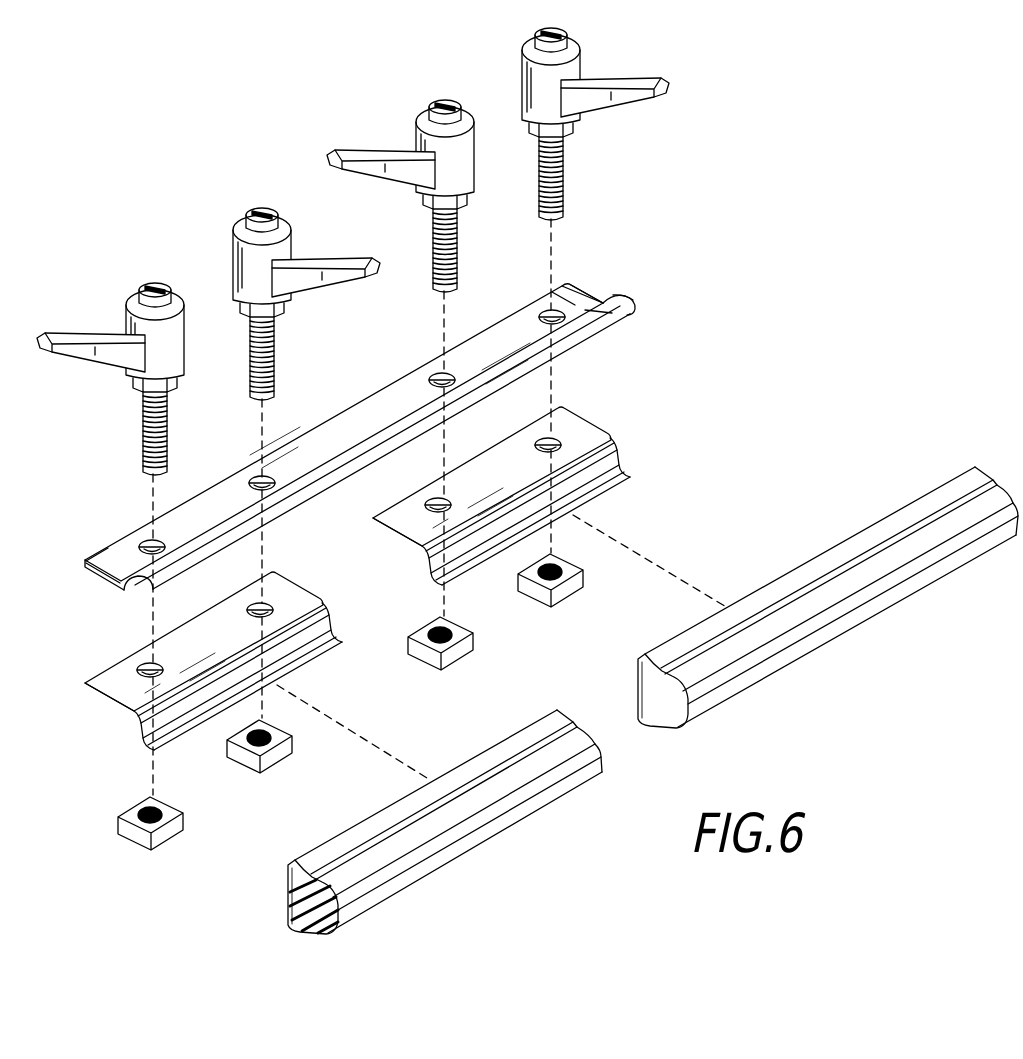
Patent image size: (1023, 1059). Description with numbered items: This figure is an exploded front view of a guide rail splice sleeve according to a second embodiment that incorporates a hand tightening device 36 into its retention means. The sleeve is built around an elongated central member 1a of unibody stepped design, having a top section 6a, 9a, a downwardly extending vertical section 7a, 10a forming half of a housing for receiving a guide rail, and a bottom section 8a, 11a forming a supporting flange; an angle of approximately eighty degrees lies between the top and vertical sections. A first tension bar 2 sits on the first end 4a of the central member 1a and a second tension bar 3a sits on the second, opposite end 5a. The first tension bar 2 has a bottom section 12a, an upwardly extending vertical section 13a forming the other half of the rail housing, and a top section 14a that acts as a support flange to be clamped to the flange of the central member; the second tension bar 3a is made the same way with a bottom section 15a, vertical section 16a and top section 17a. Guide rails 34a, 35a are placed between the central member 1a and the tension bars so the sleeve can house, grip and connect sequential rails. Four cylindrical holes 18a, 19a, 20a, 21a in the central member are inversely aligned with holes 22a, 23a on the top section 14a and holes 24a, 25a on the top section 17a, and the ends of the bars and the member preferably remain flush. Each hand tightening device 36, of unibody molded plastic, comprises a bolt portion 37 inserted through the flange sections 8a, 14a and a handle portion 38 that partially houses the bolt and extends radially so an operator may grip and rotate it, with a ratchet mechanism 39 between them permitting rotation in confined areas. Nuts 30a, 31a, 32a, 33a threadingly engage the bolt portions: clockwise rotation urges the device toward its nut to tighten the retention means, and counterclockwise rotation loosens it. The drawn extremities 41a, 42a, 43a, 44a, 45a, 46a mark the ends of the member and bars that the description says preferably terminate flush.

The elongated central member 1a is at (374, 435).
The first tension bar 2 is at (207, 636).
The second tension bar 3a is at (478, 491).
The first end of the central member 4a is at (230, 477).
The second end of the central member 5a is at (515, 310).
The top section of the central member 6a is at (208, 542).
The vertical section of the central member 7a is at (117, 585).
The bottom section of the central member 8a is at (103, 555).
The top section of the central member 9a is at (597, 318).
The vertical section of the central member 10a is at (633, 295).
The bottom section of the central member 11a is at (572, 292).
The bottom section of the first tension bar 12a is at (245, 693).
The vertical section of the first tension bar 13a is at (234, 673).
The top section of the first tension bar 14a is at (204, 641).
The bottom section of the second tension bar 15a is at (533, 528).
The vertical section of the second tension bar 16a is at (522, 508).
The top section of the second tension bar 17a is at (492, 476).
The hole 18a is at (145, 540).
The hole 19a is at (270, 470).
The hole 20a is at (433, 375).
The hole 21a is at (547, 310).
The hole 22a is at (150, 670).
The hole 23a is at (290, 595).
The hole 24a is at (438, 505).
The hole 25a is at (548, 445).
The nut 30a is at (163, 837).
The nut 31a is at (277, 757).
The nut 32a is at (457, 653).
The nut 33a is at (563, 590).
The guide rail 34a is at (427, 863).
The guide rail 35a is at (843, 620).
The hand tightening device 36 is at (178, 347).
The bolt portion 37 is at (142, 425).
The handle portion 38 is at (103, 333).
The ratchet mechanism 39 is at (170, 385).
The end of bar 41a is at (113, 567).
The end of bar 42a is at (588, 302).
The end of clamp 43a is at (119, 716).
The end of clamp 44a is at (332, 622).
The end of clamp 45a is at (407, 551).
The end of clamp 46a is at (620, 457).